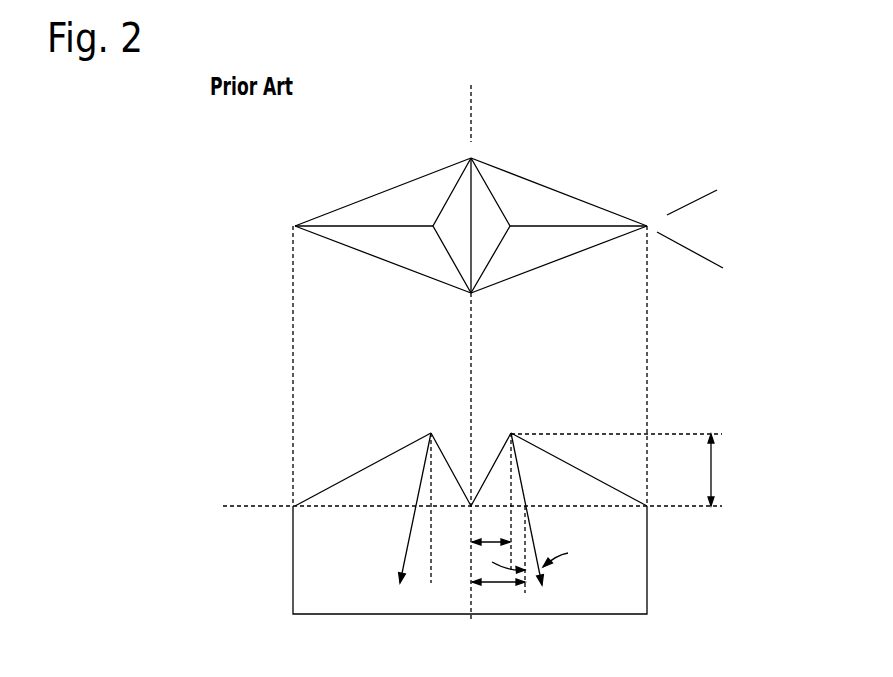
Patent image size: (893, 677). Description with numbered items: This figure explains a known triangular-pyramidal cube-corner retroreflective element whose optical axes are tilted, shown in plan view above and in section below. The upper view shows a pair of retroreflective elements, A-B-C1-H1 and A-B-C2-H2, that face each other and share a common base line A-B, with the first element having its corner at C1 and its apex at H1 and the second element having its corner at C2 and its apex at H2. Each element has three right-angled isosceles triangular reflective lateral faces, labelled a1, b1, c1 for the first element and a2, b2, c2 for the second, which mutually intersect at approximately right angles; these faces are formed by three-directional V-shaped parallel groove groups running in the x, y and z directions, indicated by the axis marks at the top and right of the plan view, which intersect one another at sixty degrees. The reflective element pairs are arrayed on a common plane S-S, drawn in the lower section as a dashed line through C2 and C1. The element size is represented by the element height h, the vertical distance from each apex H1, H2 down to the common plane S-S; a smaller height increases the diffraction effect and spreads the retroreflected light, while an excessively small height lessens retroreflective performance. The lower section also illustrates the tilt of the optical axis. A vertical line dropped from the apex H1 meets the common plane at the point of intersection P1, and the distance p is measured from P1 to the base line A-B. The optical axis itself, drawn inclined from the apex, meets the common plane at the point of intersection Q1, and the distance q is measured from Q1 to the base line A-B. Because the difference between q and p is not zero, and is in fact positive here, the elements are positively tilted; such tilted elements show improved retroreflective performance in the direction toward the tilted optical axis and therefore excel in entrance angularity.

The base line end point A is at (481, 216).
The base line end point B is at (482, 456).
The corner of first retroreflective element C1 is at (594, 353).
The corner of second retroreflective element C2 is at (350, 355).
The apex of first retroreflective element H1 is at (516, 394).
The apex of second retroreflective element H2 is at (415, 393).
The point of intersection of vertical line with common plane P1 is at (471, 470).
The point of intersection of optical axis with common plane Q1 is at (537, 538).
The common plane S is at (471, 506).
The x direction x is at (470, 100).
The y direction y is at (700, 193).
The z direction z is at (697, 260).
The reflective lateral face a1 is at (559, 192).
The reflective lateral face a2 is at (383, 259).
The reflective lateral face b1 is at (559, 259).
The reflective lateral face b2 is at (383, 192).
The reflective lateral face c1 is at (490, 225).
The reflective lateral face c2 is at (452, 225).
The element height h is at (620, 470).
The distance p is at (491, 532).
The distance q is at (498, 590).